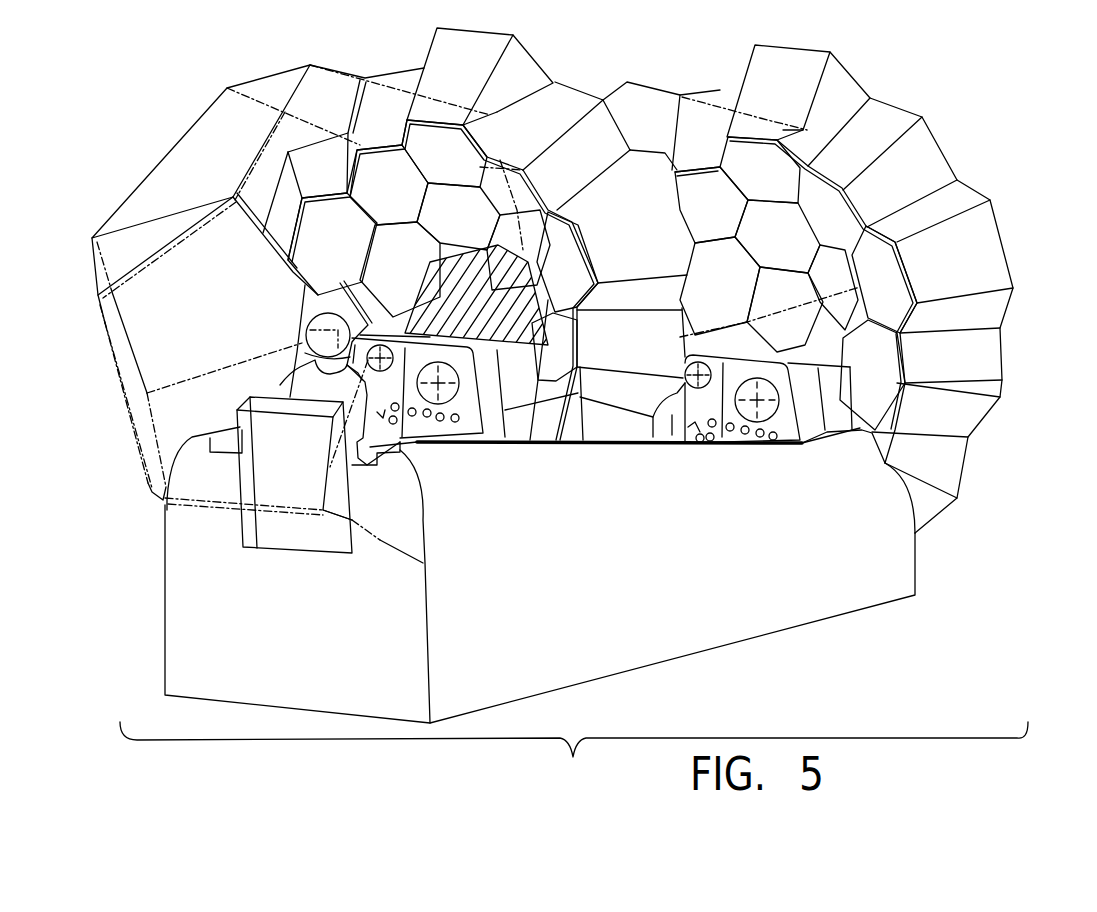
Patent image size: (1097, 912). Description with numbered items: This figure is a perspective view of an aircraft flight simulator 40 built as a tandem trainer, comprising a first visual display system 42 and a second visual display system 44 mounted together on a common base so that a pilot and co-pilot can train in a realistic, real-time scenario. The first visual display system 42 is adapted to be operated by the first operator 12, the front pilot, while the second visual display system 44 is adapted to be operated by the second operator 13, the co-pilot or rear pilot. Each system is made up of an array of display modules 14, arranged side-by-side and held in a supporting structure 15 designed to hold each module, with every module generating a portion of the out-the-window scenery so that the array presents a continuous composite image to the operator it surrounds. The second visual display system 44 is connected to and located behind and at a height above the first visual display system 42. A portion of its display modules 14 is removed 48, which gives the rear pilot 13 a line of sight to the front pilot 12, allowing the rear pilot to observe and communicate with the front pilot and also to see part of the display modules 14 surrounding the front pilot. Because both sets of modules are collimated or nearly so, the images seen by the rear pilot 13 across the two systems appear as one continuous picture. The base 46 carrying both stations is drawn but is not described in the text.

The aircraft flight simulator 40 is at (573, 757).
The first visual display system 42 is at (995, 418).
The second visual display system 44 is at (163, 127).
The base 46 is at (648, 588).
The display modules 14 is at (397, 198).
The supporting structure 15 is at (437, 117).
The removed portion of display modules 48 is at (478, 250).
The first operator 12 is at (660, 433).
The second operator 13 is at (313, 388).